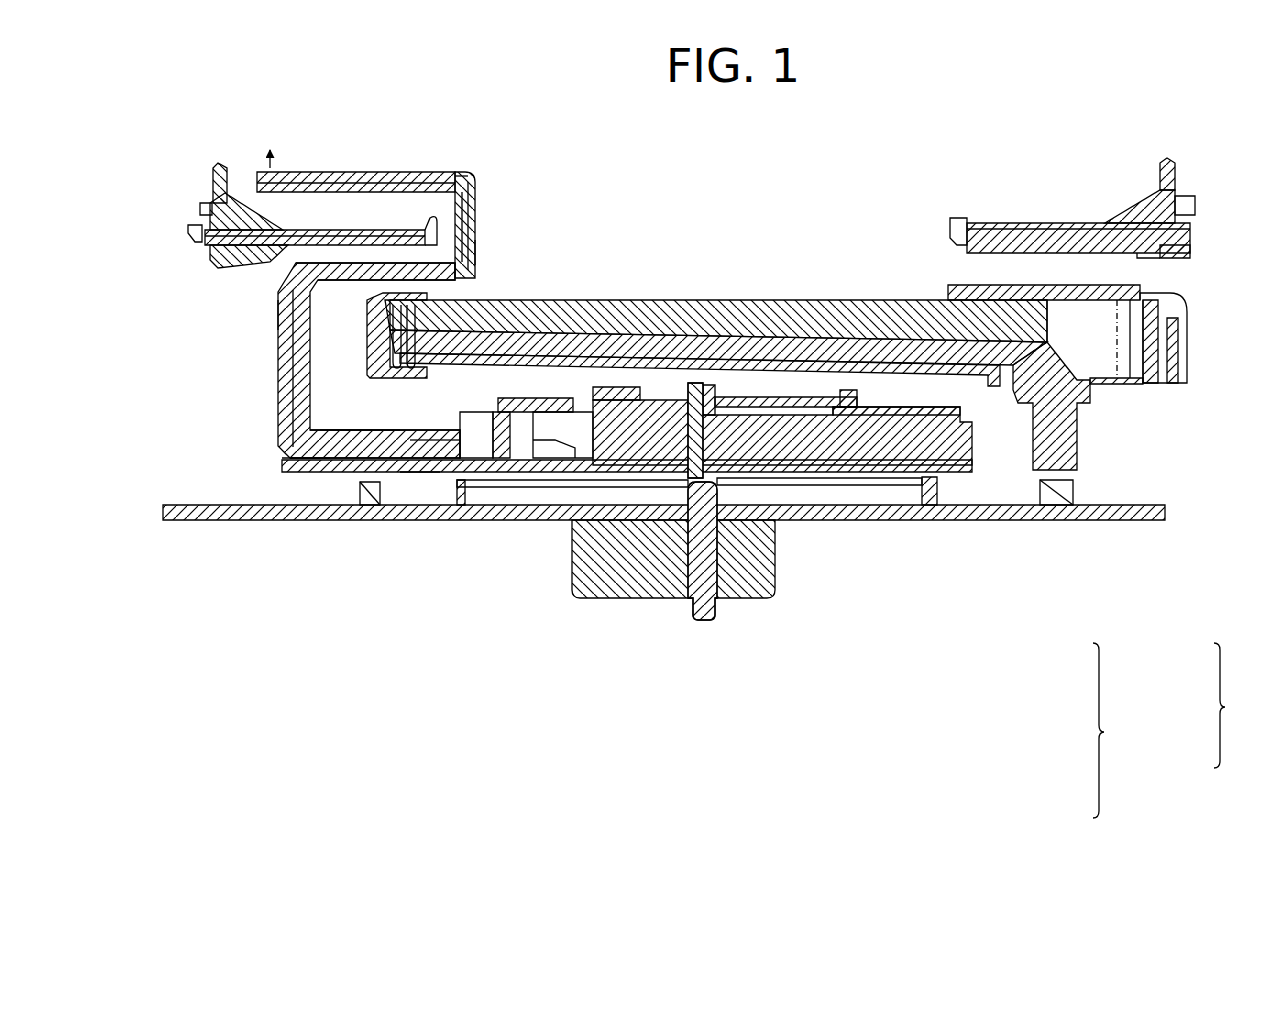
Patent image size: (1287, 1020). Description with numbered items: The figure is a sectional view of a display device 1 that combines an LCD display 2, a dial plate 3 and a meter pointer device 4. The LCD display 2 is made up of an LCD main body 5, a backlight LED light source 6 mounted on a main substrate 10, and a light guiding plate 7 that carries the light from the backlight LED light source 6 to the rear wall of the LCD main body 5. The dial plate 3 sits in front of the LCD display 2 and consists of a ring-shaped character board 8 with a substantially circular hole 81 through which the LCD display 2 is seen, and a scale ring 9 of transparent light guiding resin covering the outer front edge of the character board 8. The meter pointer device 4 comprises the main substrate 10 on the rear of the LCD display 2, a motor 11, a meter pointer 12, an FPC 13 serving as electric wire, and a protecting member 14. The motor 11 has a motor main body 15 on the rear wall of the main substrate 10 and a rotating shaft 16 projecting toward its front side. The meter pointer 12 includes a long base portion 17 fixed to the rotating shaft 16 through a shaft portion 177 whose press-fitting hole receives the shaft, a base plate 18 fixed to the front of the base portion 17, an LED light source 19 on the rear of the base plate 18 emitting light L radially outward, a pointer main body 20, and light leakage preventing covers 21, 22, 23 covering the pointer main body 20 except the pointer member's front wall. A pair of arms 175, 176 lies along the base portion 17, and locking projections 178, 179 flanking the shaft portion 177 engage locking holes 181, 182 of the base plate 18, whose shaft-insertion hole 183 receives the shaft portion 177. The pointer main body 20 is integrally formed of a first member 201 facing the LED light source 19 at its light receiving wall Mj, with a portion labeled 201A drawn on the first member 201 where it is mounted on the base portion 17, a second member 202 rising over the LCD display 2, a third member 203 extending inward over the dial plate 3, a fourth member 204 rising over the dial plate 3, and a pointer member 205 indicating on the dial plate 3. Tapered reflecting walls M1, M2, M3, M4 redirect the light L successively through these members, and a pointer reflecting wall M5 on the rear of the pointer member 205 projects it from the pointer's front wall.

The display device 1 is at (1160, 130).
The LCD display 2 is at (842, 296).
The dial plate 3 is at (1188, 198).
The meter pointer device 4 is at (1216, 706).
The LCD main body 5 is at (808, 352).
The backlight LED light source 6 is at (1075, 492).
The light guiding plate 7 is at (1063, 441).
The character board 8 is at (1060, 204).
The substantially circular hole 81 is at (957, 225).
The scale ring 9 is at (1140, 205).
The main substrate 10 is at (1045, 522).
The motor 11 is at (680, 572).
The meter pointer 12 is at (1098, 731).
The FPC 13 is at (462, 497).
The protecting member 14 is at (365, 490).
The motor main body 15 is at (763, 600).
The rotating shaft 16 is at (690, 500).
The base portion 17 is at (958, 470).
The base plate 18 is at (790, 392).
The LED light source 19 is at (525, 430).
The pointer main body 20 is at (379, 184).
The light leakage preventing cover 21 is at (304, 359).
The light leakage preventing cover 22 is at (288, 421).
The light leakage preventing cover 23 is at (476, 252).
The arm 175 is at (345, 426).
The arm 176 is at (497, 442).
The shaft portion 177 is at (697, 386).
The locking projection 178 is at (612, 393).
The locking projection 179 is at (870, 417).
The locking hole 181 is at (565, 405).
The locking hole 182 is at (848, 392).
The shaft-insertion hole 183 is at (605, 456).
The first member 201 is at (599, 541).
The mounting surface 201A is at (412, 474).
The second member 202 is at (300, 318).
The third member 203 is at (337, 272).
The fourth member 204 is at (475, 220).
The pointer member 205 is at (338, 140).
The first reflecting wall M1 is at (290, 452).
The second reflecting wall M2 is at (278, 297).
The third reflecting wall M3 is at (476, 262).
The fourth reflecting wall M4 is at (452, 176).
The pointer reflecting wall M5 is at (383, 185).
The light L is at (417, 442).
The light receiving wall Mj is at (447, 442).